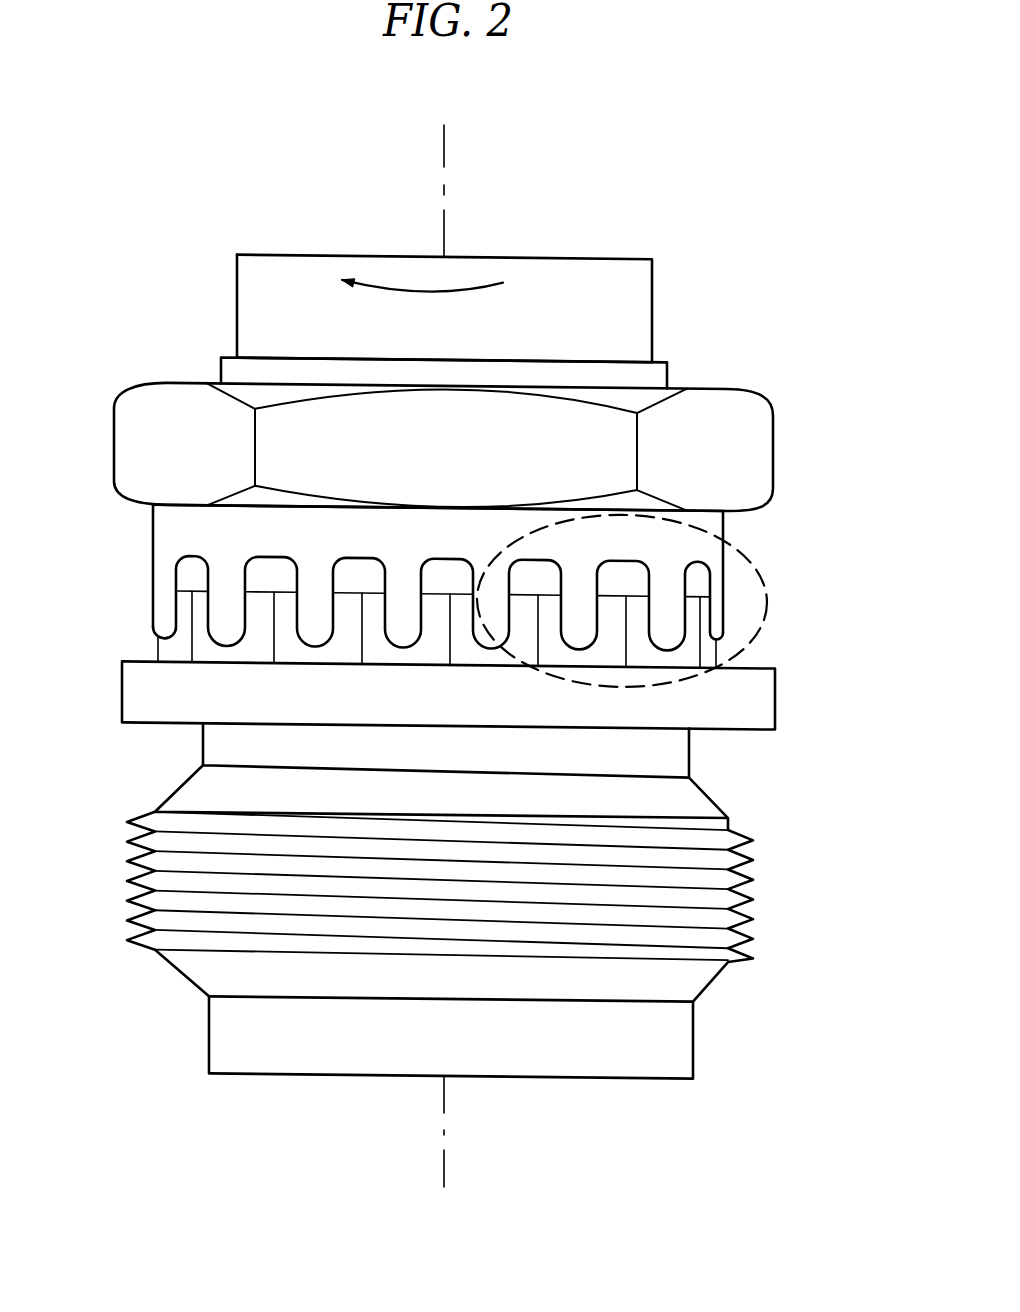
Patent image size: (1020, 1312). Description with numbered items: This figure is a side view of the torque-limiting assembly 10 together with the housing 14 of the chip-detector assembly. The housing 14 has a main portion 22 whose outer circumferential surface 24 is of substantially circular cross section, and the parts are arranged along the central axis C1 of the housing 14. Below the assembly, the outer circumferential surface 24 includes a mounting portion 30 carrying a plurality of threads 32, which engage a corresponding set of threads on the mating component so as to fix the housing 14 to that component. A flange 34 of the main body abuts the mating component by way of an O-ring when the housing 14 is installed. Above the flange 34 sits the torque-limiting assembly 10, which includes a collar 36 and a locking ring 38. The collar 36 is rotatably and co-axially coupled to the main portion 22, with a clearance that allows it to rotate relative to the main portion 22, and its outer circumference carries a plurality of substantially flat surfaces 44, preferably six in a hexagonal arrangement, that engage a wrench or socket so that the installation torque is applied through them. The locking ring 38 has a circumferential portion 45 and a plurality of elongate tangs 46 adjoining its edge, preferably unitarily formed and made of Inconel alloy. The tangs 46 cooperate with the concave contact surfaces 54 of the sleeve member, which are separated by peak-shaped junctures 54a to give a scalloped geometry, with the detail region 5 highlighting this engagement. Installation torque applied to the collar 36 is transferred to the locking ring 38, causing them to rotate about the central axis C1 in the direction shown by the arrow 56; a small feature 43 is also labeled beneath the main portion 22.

The torque-limiting assembly 10 is at (126, 543).
The housing 14 is at (222, 140).
The main portion 22 is at (624, 240).
The outer circumferential surface 24 is at (558, 316).
The mounting portion 30 is at (150, 773).
The threads 32 is at (130, 866).
The flange 34 is at (777, 680).
The collar 36 is at (758, 375).
The locking ring 38 is at (739, 517).
The collar 43 is at (669, 370).
The flat surfaces 44 is at (161, 447).
The circumferential portion 45 is at (429, 543).
The tangs 46 is at (302, 643).
The contact surfaces 54 is at (375, 650).
The peak-shaped junctures 54a is at (453, 643).
The arrow 56 is at (437, 294).
The detail region 5 is at (766, 586).
The central axis C1 is at (500, 1153).